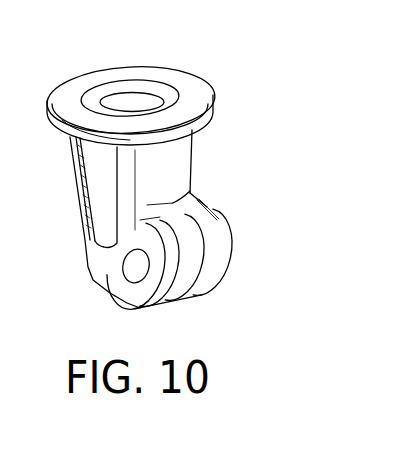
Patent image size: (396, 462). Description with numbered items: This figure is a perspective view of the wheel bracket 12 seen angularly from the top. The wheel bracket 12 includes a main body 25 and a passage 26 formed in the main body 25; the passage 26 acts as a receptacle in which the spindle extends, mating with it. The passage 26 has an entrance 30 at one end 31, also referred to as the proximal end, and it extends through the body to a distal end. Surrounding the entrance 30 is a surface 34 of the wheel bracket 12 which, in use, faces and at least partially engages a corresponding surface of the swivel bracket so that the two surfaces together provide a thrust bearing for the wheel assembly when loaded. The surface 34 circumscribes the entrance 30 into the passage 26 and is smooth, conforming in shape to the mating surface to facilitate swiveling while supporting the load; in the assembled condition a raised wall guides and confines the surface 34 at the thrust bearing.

The wheel bracket 12 is at (194, 54).
The main body 25 is at (193, 161).
The passage 26 is at (127, 107).
The entrance 30 is at (172, 104).
The end 31 is at (187, 91).
The surface 34 is at (148, 77).